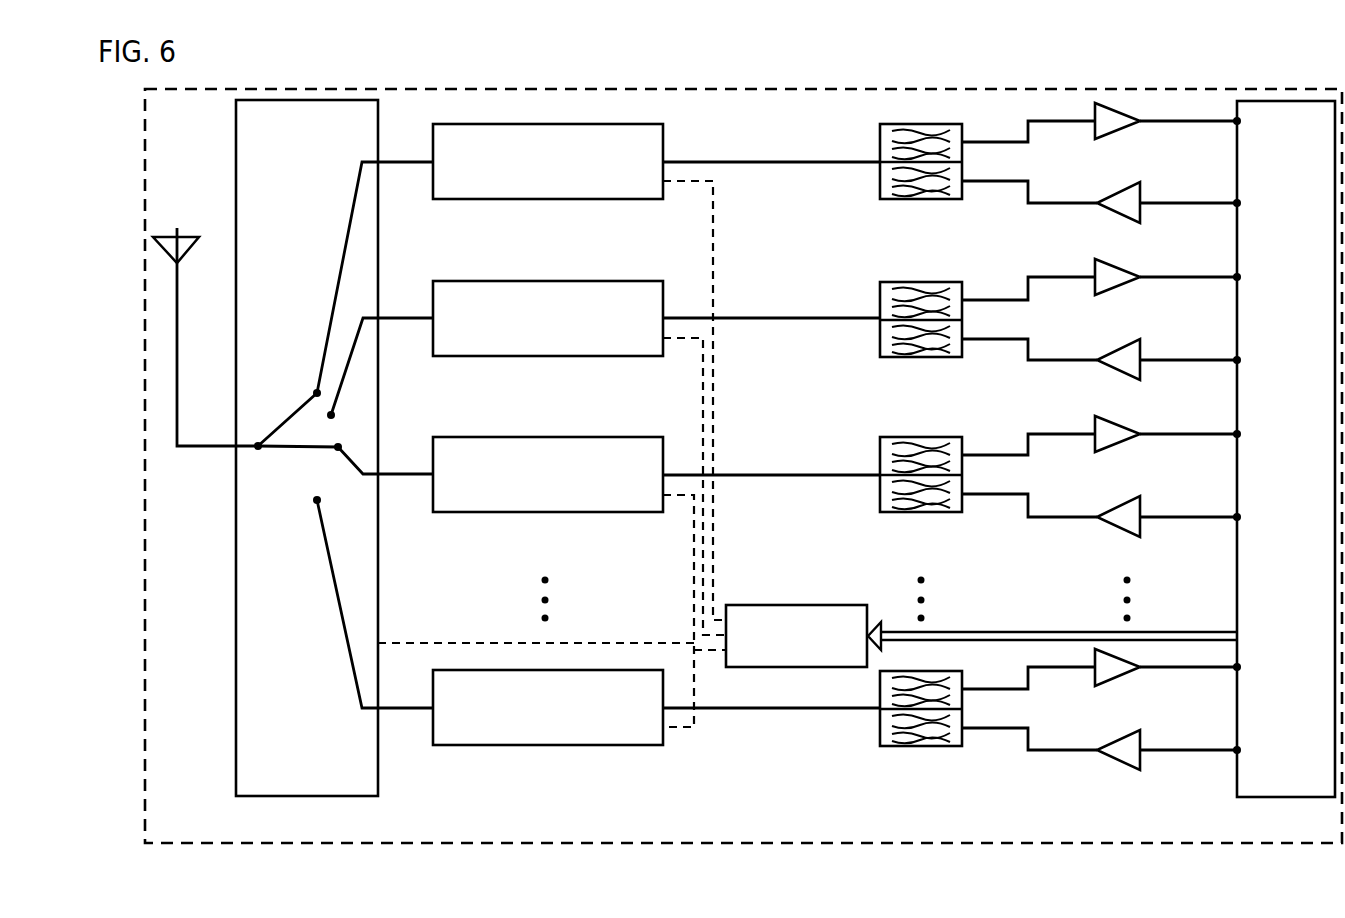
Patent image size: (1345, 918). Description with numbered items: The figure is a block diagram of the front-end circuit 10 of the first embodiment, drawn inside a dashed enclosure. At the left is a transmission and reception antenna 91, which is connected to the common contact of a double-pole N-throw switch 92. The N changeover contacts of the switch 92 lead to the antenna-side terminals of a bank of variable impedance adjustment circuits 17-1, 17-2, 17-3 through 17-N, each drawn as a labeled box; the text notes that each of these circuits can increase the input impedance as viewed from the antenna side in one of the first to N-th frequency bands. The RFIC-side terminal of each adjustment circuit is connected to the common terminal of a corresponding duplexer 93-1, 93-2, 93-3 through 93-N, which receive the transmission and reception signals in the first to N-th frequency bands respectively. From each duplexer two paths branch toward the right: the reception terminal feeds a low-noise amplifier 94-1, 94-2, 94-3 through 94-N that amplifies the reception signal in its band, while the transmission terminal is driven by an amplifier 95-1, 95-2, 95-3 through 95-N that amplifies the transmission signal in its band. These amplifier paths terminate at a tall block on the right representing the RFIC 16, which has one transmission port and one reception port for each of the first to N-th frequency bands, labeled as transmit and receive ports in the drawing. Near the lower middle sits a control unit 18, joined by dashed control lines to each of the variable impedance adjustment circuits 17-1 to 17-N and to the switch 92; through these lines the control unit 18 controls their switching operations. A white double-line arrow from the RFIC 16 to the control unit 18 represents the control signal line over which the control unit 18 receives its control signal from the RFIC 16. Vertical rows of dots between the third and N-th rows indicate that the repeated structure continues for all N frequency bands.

The front-end circuit 10 is at (144, 462).
The transmission and reception antenna 91 is at (178, 228).
The double-pole N-throw switch 92 is at (303, 797).
The variable impedance adjustment circuit 17-1 is at (550, 199).
The variable impedance adjustment circuit 17-2 is at (550, 356).
The variable impedance adjustment circuit 17-3 is at (550, 512).
The variable impedance adjustment circuit 17-N is at (550, 745).
The duplexer 93-1 is at (920, 199).
The duplexer 93-2 is at (920, 357).
The duplexer 93-3 is at (920, 512).
The duplexer 93-N is at (920, 746).
The low-noise amplifier 94-1 is at (1118, 133).
The low-noise amplifier 94-2 is at (1118, 289).
The low-noise amplifier 94-3 is at (1118, 446).
The low-noise amplifier 94-N is at (1118, 680).
The amplifier 95-1 is at (1113, 217).
The amplifier 95-2 is at (1113, 374).
The amplifier 95-3 is at (1113, 531).
The amplifier 95-N is at (1113, 764).
The control unit 18 is at (797, 605).
The RFIC 16 is at (1285, 797).